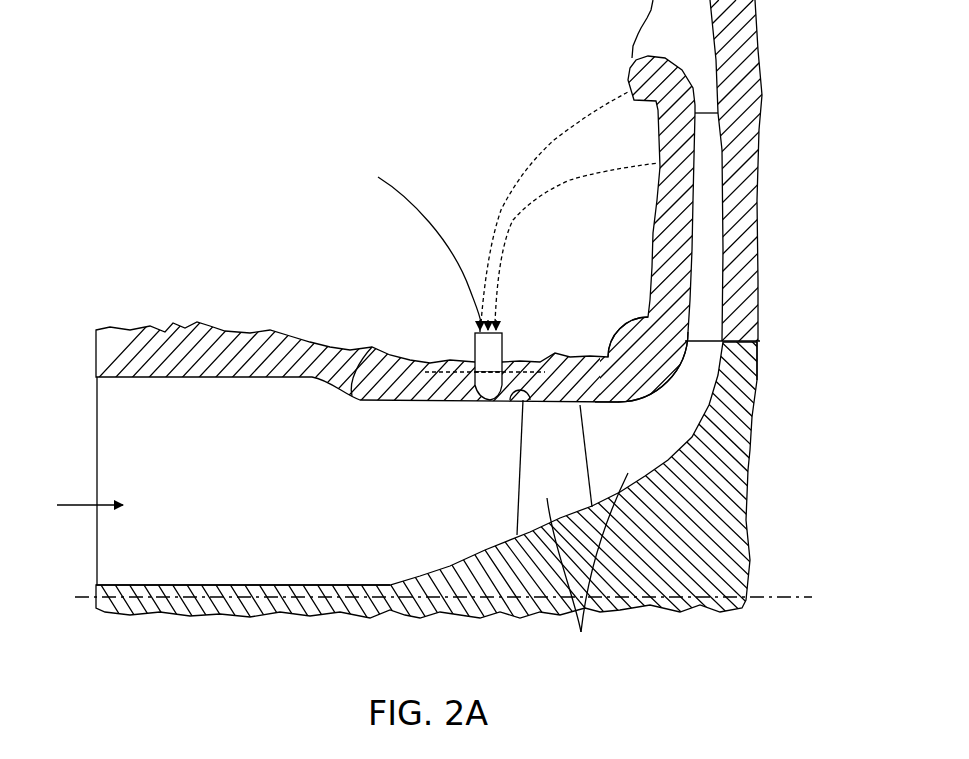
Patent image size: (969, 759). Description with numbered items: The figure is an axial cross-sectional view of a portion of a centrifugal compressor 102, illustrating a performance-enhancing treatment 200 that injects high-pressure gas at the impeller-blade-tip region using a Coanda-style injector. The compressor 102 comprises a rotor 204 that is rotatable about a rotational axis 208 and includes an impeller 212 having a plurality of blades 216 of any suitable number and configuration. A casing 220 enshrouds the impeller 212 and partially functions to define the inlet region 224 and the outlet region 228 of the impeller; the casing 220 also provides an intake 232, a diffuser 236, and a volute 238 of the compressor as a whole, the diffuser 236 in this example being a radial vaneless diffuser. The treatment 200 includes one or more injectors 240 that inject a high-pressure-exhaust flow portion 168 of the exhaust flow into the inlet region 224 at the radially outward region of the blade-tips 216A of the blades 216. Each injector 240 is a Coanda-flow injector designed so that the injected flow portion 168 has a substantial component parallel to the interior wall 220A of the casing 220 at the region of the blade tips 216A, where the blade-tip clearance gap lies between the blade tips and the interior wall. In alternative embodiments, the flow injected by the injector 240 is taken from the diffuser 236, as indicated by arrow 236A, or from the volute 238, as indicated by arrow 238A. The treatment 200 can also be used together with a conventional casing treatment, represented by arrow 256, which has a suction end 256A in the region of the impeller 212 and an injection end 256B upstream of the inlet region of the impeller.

The centrifugal compressor 102 is at (779, 507).
The high-pressure-exhaust flow portion 168 is at (400, 194).
The treatment 200 is at (452, 352).
The rotor 204 is at (642, 583).
The rotational axis 208 is at (404, 604).
The impeller 212 is at (632, 410).
The blades 216 is at (587, 533).
The blade-tips 216A is at (497, 400).
The casing 220 is at (245, 348).
The interior wall 220A is at (372, 347).
The inlet region 224 is at (510, 478).
The outlet region 228 is at (711, 334).
The intake 232 is at (202, 488).
The diffuser 236 is at (764, 244).
The arrow 236A is at (583, 178).
The volute 238 is at (626, 56).
The arrow 238A is at (497, 203).
The injector 240 is at (506, 349).
The arrow 256 is at (535, 372).
The suction end 256A is at (611, 408).
The injection end 256B is at (421, 403).